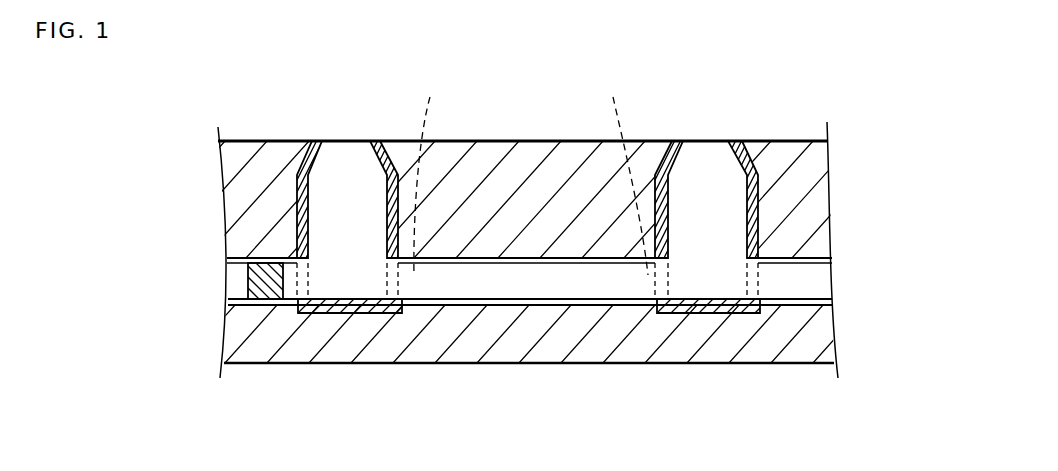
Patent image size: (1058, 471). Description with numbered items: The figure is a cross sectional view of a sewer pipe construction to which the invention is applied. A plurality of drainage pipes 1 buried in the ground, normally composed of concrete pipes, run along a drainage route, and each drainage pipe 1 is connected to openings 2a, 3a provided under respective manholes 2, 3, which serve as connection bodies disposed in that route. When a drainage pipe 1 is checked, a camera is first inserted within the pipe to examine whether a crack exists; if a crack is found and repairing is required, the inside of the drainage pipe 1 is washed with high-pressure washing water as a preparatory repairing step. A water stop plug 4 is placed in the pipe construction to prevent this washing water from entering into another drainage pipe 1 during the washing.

The drainage pipe 1 is at (516, 258).
The manhole 2 is at (390, 141).
The opening 2a is at (433, 171).
The manhole 3 is at (750, 141).
The opening 3a is at (624, 171).
The water stop plug 4 is at (268, 287).